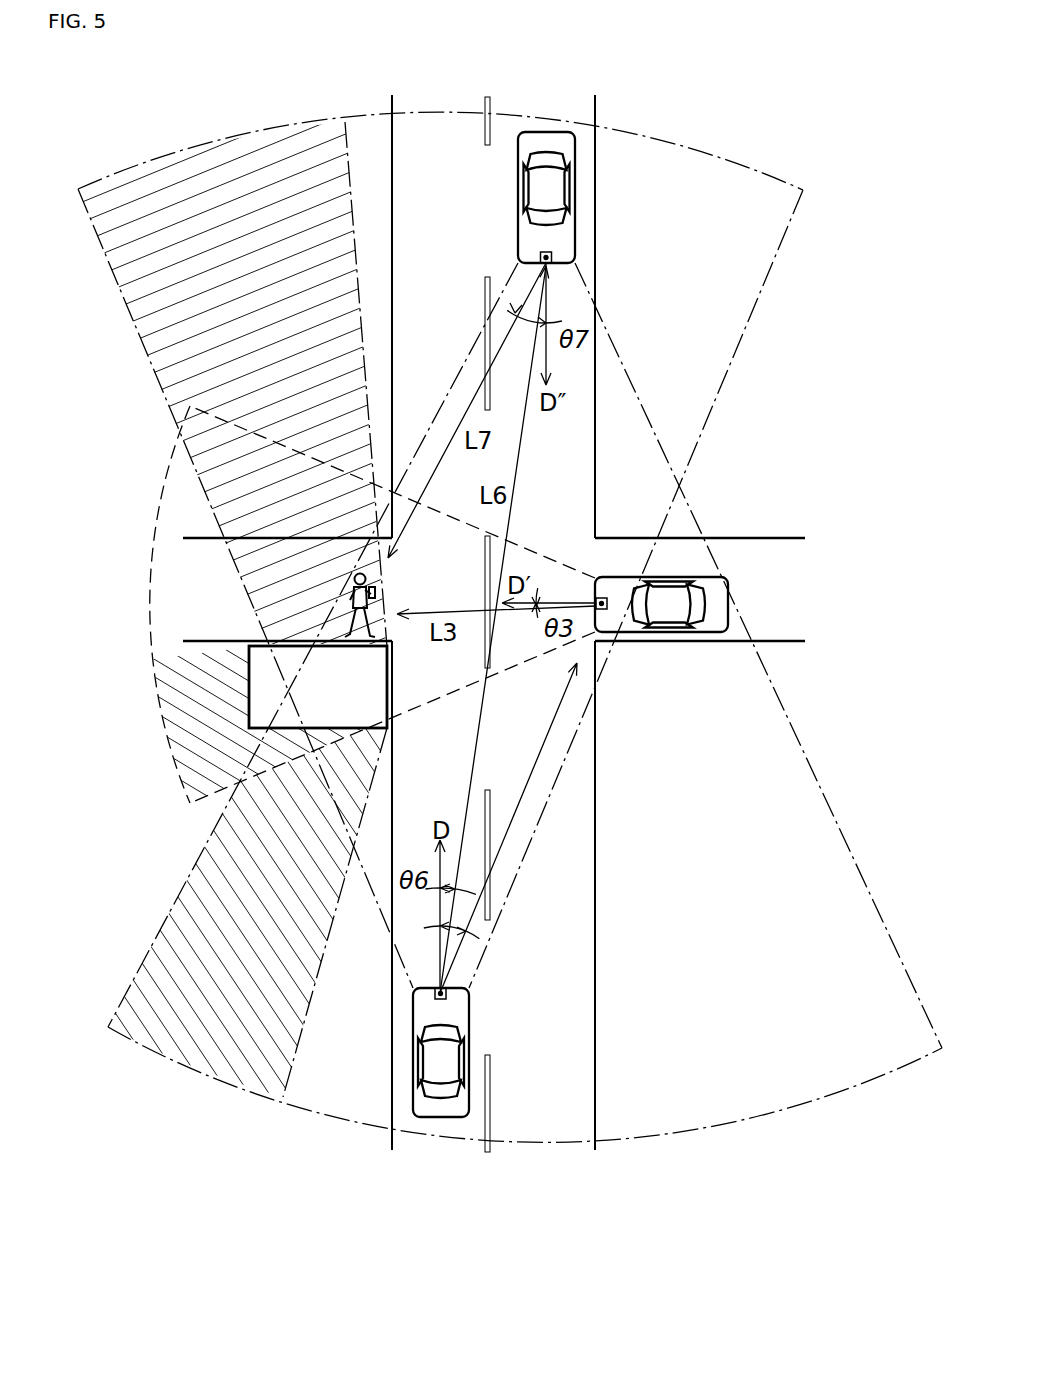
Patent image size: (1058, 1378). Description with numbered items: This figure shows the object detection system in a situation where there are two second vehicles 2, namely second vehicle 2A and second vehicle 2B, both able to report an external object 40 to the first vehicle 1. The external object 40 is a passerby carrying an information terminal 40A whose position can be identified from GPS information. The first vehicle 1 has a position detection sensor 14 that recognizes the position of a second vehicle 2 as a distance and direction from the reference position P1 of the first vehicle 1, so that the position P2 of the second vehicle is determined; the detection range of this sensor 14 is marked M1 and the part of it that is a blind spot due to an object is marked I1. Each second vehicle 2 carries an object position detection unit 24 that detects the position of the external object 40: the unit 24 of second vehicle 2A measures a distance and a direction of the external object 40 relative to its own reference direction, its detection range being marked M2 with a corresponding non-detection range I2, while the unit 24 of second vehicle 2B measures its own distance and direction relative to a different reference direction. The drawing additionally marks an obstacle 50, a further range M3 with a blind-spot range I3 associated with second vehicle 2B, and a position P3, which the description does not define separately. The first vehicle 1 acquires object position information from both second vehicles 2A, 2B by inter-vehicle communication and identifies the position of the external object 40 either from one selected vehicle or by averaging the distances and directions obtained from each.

The host vehicle 1 is at (426, 1120).
The other vehicle 2 is at (701, 349).
The other vehicle A 2A is at (728, 582).
The other vehicle B 2B is at (573, 205).
The sensor of host vehicle 14 is at (445, 994).
The sensor of other vehicle 24 is at (553, 262).
The pedestrian 40 is at (360, 590).
The portable terminal of pedestrian 40A is at (373, 590).
The building (obstacle) 50 is at (267, 690).
The detection area of host vehicle sensor M1 is at (747, 183).
The detection area of other vehicle 2A sensor M2 is at (170, 510).
The detection area of other vehicle 2B sensor M3 is at (862, 906).
The blind region in M1 I1 is at (203, 163).
The blind region in M2 I2 is at (172, 673).
The blind region in M3 I3 is at (146, 1040).
The position of host vehicle P1 is at (442, 990).
The position of other vehicle 2A P2 is at (607, 606).
The position of other vehicle 2B P3 is at (552, 256).